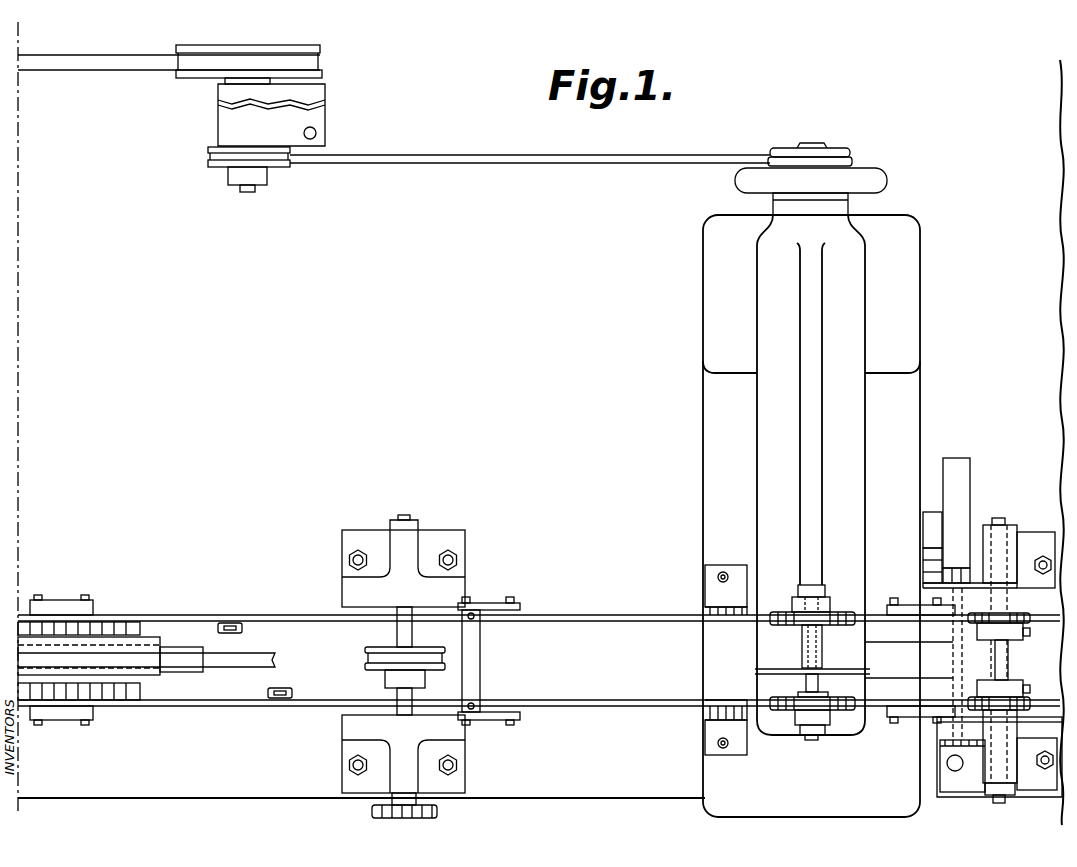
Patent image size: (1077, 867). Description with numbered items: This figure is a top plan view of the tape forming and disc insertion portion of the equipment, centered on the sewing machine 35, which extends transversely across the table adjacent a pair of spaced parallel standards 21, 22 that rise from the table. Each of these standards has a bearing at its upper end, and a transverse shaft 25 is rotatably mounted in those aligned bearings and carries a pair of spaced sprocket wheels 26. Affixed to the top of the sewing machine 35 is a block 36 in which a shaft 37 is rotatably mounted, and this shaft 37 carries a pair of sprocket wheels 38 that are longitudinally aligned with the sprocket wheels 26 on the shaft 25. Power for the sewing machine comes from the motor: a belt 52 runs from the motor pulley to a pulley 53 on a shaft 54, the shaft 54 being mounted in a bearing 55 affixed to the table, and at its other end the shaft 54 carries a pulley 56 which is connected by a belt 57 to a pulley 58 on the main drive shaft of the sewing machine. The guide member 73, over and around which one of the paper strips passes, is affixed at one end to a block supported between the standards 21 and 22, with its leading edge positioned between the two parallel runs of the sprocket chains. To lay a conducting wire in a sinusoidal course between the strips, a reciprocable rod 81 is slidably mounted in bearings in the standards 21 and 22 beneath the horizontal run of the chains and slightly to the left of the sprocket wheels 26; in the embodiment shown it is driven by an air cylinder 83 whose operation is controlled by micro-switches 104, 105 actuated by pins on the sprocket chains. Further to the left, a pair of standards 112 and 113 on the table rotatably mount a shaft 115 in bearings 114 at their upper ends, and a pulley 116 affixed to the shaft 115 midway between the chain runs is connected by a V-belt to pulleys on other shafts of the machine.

The belt 52 is at (92, 70).
The pulley 53 is at (322, 48).
The shaft 54 is at (247, 195).
The bearing 55 is at (326, 112).
The pulley 56 is at (212, 166).
The belt 57 is at (481, 165).
The pulley 58 is at (850, 151).
The sewing machine 35 is at (748, 416).
The block 36 is at (800, 643).
The shaft 37 is at (814, 590).
The sprocket wheels 38 is at (777, 606).
The guide member 73 is at (892, 660).
The reciprocable rod 81 is at (955, 660).
The air cylinder 83 is at (972, 467).
The transverse shaft 25 is at (997, 523).
The standard 21 is at (1021, 548).
The sprocket wheels 26 is at (1030, 620).
The standard 22 is at (985, 765).
The micro-switch 104 is at (235, 622).
The micro-switch 105 is at (281, 700).
The standard 112 is at (468, 778).
The standard 113 is at (425, 550).
The bearings 114 is at (395, 542).
The shaft 115 is at (397, 640).
The pulley 116 is at (365, 667).